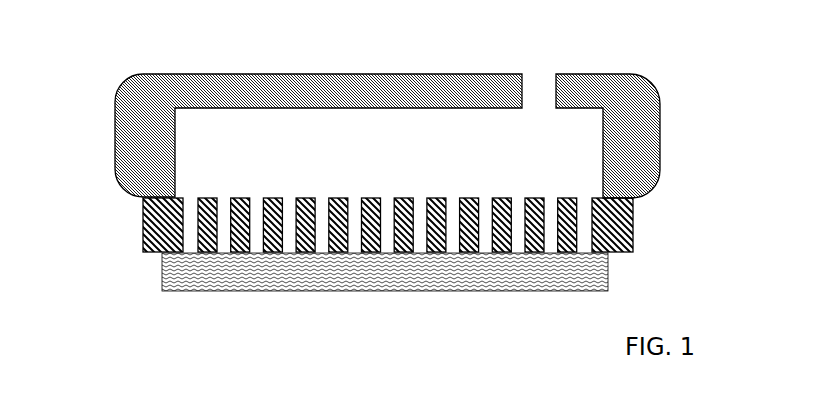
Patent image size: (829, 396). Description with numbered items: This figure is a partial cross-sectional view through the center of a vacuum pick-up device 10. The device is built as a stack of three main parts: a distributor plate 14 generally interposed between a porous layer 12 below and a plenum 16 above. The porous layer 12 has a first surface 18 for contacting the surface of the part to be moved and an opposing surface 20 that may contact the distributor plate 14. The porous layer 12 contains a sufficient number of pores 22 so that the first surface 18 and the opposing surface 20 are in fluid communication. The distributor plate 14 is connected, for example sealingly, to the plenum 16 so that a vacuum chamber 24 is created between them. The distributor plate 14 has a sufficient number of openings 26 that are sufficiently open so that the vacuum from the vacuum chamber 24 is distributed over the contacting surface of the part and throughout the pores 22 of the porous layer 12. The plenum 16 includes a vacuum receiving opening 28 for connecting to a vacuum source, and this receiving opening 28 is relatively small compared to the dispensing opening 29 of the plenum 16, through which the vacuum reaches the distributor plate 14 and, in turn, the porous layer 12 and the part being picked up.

The vacuum pick-up device 10 is at (410, 44).
The porous layer 12 is at (332, 278).
The distributor plate 14 is at (339, 292).
The plenum 16 is at (115, 118).
The first surface 18 is at (519, 283).
The opposing surface 20 is at (370, 253).
The pores 22 is at (259, 262).
The vacuum chamber 24 is at (272, 160).
The openings 26 is at (585, 243).
The vacuum receiving opening 28 is at (542, 98).
The dispensing opening 29 is at (376, 195).